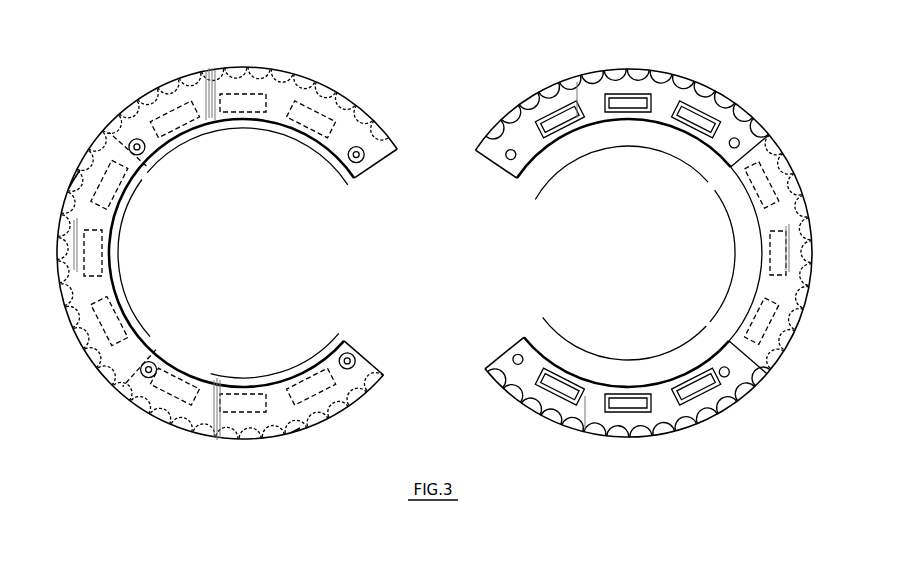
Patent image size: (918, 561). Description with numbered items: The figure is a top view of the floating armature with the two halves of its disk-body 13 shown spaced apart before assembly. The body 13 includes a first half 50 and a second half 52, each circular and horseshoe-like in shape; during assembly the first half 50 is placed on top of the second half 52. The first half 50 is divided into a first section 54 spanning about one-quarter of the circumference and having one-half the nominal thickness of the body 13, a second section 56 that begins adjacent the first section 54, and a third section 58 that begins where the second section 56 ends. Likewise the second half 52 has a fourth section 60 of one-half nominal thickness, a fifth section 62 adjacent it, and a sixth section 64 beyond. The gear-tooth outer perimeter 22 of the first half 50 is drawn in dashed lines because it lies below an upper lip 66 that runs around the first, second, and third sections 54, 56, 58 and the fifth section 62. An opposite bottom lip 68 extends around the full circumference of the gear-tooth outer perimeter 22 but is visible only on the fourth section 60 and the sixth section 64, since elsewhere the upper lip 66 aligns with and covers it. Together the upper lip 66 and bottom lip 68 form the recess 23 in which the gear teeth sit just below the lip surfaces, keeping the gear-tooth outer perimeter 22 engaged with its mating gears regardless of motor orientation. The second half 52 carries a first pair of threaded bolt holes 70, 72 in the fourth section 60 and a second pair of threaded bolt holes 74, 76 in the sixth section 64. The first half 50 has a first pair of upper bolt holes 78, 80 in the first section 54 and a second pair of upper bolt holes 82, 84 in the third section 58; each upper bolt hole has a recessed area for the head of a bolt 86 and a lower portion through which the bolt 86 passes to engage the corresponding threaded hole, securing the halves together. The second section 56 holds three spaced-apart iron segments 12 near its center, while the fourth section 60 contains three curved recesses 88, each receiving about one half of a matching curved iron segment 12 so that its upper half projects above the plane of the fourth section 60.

The iron segments 12 is at (80, 164).
The body 13 is at (421, 60).
The gear-tooth outer perimeter 22 is at (187, 442).
The recess 23 is at (578, 76).
The first half 50 is at (284, 48).
The second half 52 is at (749, 80).
The first section 54 is at (249, 132).
The second section 56 is at (121, 262).
The third section 58 is at (254, 376).
The fourth section 60 is at (622, 150).
The fifth section 62 is at (733, 258).
The sixth section 64 is at (630, 356).
The upper lip 66 is at (322, 80).
The bottom lip 68 is at (745, 118).
The threaded bolt hole 70 is at (740, 143).
The threaded bolt hole 72 is at (508, 150).
The threaded bolt hole 74 is at (730, 376).
The threaded bolt hole 76 is at (513, 357).
The upper bolt hole 78 is at (362, 164).
The upper bolt hole 80 is at (115, 134).
The upper bolt hole 82 is at (352, 353).
The upper bolt hole 84 is at (138, 395).
The bolt 86 is at (134, 139).
The curved recesses 88 is at (240, 66).